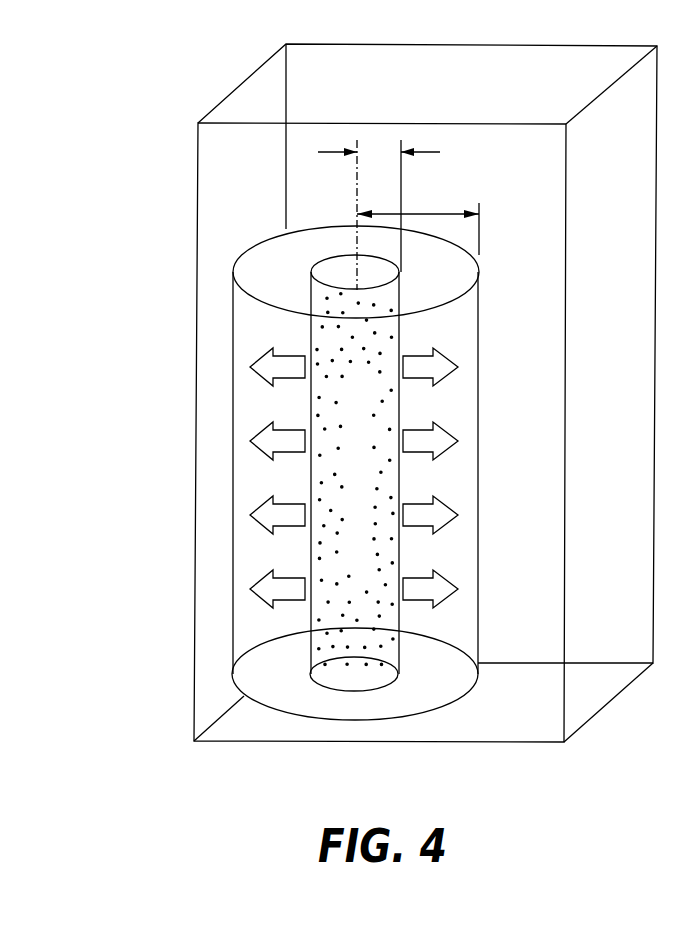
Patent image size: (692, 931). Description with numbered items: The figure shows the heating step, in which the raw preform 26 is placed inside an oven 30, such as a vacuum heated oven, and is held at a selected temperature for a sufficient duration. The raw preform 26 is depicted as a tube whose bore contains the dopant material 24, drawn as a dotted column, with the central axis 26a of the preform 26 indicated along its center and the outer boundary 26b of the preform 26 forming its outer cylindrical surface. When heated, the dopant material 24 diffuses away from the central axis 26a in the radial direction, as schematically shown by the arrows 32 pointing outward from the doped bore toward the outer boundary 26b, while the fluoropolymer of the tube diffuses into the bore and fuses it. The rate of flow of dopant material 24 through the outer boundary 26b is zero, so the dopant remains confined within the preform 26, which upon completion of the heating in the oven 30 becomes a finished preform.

The oven 30 is at (150, 233).
The raw preform 26 is at (245, 552).
The central axis 26a is at (357, 180).
The outer boundary 26b is at (457, 550).
The dopant material 24 is at (382, 303).
The arrows 32 is at (293, 378).